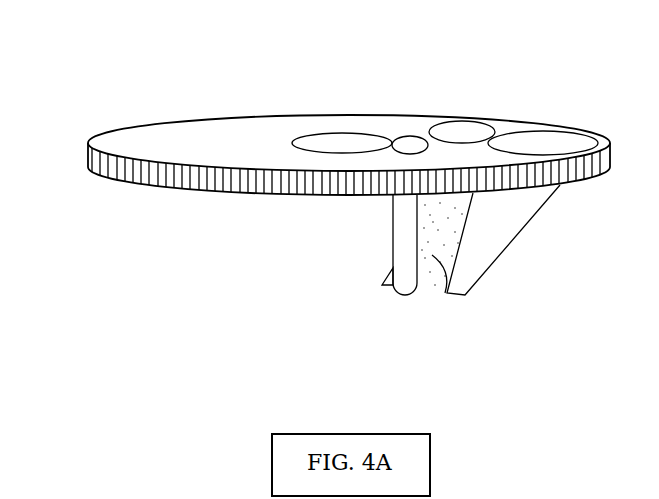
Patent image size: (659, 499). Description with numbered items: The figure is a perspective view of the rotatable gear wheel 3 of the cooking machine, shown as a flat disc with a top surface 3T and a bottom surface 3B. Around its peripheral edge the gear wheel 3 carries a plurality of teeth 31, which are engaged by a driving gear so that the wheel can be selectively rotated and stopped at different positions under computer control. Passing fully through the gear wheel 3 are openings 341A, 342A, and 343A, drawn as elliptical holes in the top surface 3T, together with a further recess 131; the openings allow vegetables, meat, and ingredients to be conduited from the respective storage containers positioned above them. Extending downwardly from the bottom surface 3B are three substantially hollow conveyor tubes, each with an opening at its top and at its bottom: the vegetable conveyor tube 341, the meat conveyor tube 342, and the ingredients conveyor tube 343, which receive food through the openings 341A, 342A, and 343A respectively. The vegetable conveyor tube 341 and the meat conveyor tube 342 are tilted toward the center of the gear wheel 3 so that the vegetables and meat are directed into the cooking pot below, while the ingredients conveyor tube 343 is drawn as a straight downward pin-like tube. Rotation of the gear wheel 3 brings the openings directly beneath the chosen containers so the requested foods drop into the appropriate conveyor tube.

The rotatable gear wheel 3 is at (314, 149).
The top surface 3T is at (202, 142).
The bottom surface 3B is at (190, 193).
The teeth 31 is at (145, 176).
The recess on top surface 131 is at (293, 140).
The opening 343A is at (424, 145).
The opening 342A is at (493, 128).
The opening 341A is at (550, 147).
The ingredients conveyor tube 343 is at (410, 235).
The meat conveyor tube 342 is at (447, 293).
The vegetable conveyor tube 341 is at (490, 235).